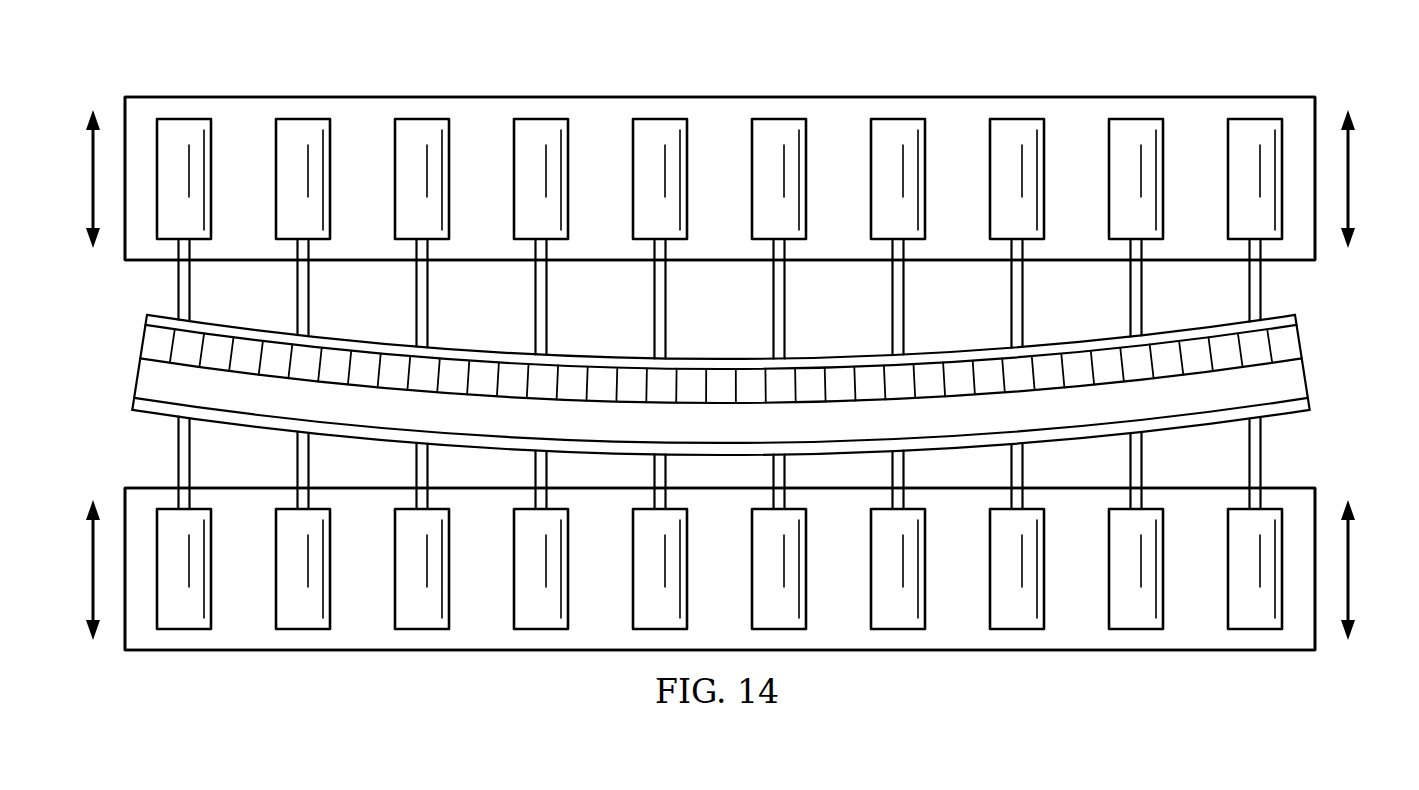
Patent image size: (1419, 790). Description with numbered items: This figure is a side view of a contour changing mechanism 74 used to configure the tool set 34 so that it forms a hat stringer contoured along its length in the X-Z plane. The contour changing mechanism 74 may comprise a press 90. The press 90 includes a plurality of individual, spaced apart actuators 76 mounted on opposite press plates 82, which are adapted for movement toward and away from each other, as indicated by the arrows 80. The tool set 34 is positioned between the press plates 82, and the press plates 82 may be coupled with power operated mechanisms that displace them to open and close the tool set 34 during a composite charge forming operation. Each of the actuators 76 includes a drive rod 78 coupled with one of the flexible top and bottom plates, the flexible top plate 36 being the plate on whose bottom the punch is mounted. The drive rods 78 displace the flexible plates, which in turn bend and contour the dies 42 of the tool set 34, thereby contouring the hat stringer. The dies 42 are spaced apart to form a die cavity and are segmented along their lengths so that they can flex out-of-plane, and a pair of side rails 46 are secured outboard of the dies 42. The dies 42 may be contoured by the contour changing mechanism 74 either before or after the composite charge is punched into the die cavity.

The tool set 34 is at (699, 374).
The flexible top plate 36 is at (1295, 318).
The dies 42 is at (147, 340).
The side rails 46 is at (142, 382).
The contour changing mechanism 74 is at (421, 67).
The actuators 76 is at (302, 130).
The drive rod 78 is at (178, 453).
The arrows 80 is at (93, 180).
The press plates 82 is at (1078, 107).
The press 90 is at (421, 683).